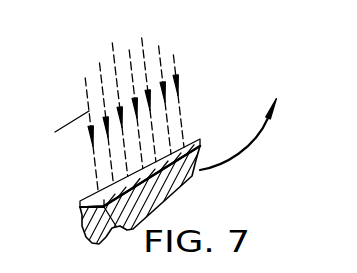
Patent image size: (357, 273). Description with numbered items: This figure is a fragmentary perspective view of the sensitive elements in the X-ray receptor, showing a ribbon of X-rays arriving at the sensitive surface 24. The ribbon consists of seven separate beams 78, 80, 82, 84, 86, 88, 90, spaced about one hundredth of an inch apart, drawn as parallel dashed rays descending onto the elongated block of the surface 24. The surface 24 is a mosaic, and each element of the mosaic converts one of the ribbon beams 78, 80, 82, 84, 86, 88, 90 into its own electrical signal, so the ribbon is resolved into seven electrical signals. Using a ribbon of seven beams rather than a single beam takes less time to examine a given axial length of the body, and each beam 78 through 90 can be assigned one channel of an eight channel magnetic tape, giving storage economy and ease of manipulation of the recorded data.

The sensitive surface 24 is at (80, 209).
The beam 78 is at (84, 110).
The beam 80 is at (100, 77).
The beam 82 is at (112, 68).
The beam 84 is at (130, 52).
The beam 86 is at (146, 91).
The beam 88 is at (162, 64).
The beam 90 is at (175, 63).